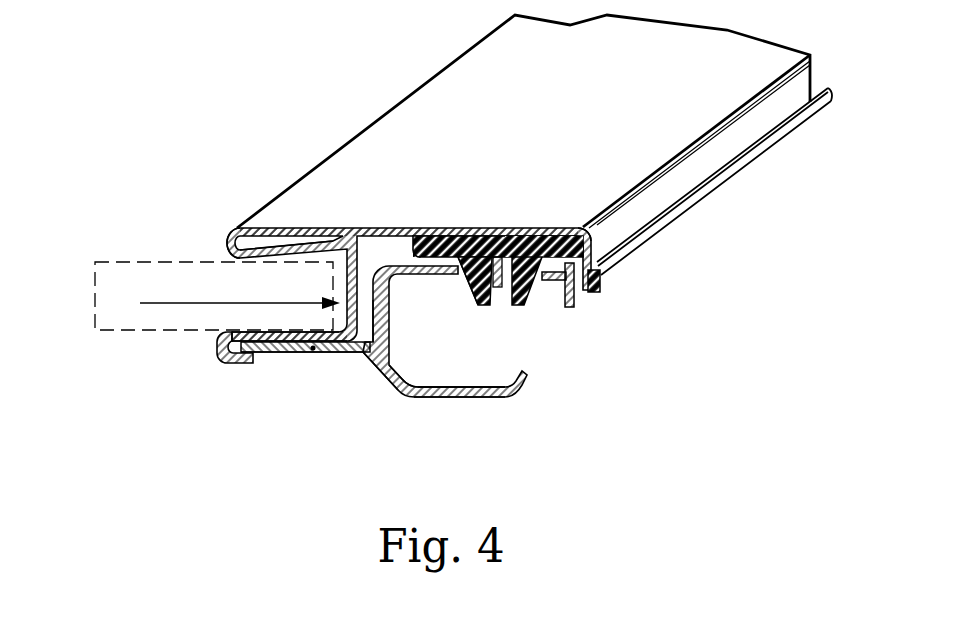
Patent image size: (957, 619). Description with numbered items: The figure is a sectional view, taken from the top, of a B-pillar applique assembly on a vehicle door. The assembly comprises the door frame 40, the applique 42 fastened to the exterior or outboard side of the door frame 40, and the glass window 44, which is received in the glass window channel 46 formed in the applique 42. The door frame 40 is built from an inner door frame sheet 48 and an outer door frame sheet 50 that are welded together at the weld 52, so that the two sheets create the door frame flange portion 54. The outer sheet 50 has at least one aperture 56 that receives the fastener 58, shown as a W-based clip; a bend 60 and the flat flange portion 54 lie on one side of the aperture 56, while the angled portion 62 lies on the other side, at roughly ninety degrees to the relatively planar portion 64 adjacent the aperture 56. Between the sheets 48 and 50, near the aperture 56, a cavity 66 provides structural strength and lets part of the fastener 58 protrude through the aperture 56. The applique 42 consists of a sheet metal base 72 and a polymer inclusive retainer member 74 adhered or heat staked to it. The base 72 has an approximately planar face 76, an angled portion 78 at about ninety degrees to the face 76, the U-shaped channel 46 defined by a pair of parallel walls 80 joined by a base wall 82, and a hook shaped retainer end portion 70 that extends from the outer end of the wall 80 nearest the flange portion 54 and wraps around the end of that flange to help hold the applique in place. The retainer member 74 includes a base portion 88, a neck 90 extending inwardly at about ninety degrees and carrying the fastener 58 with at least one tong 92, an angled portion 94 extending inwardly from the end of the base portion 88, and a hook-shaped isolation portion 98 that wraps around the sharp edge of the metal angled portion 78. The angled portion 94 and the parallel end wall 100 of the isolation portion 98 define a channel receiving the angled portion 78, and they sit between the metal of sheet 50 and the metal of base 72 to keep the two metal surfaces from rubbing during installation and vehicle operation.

The door frame 40 is at (427, 398).
The applique 42 is at (405, 115).
The glass window 44 is at (150, 272).
The glass window channel 46 is at (238, 334).
The inner door frame sheet 48 is at (390, 382).
The outer door frame sheet 50 is at (390, 300).
The weld 52 is at (312, 355).
The door frame flange portion 54 is at (266, 364).
The aperture 56 is at (499, 245).
The fastener 58 is at (486, 308).
The bend 60 is at (385, 338).
The angled portion 62 is at (582, 300).
The planar portion 64 is at (545, 236).
The cavity 66 is at (482, 390).
The hook shaped retainer end portion 70 is at (226, 366).
The base 72 is at (259, 225).
The polymer inclusive retainer member 74 is at (531, 236).
The face 76 is at (455, 80).
The angled portion 78 is at (630, 242).
The walls 80 is at (312, 228).
The base wall 82 is at (372, 228).
The base portion 88 is at (450, 236).
The neck 90 is at (505, 248).
The tong 92 is at (460, 275).
The angled portion 94 is at (589, 224).
The hook-shaped isolation portion 98 is at (590, 289).
The end wall 100 is at (770, 140).